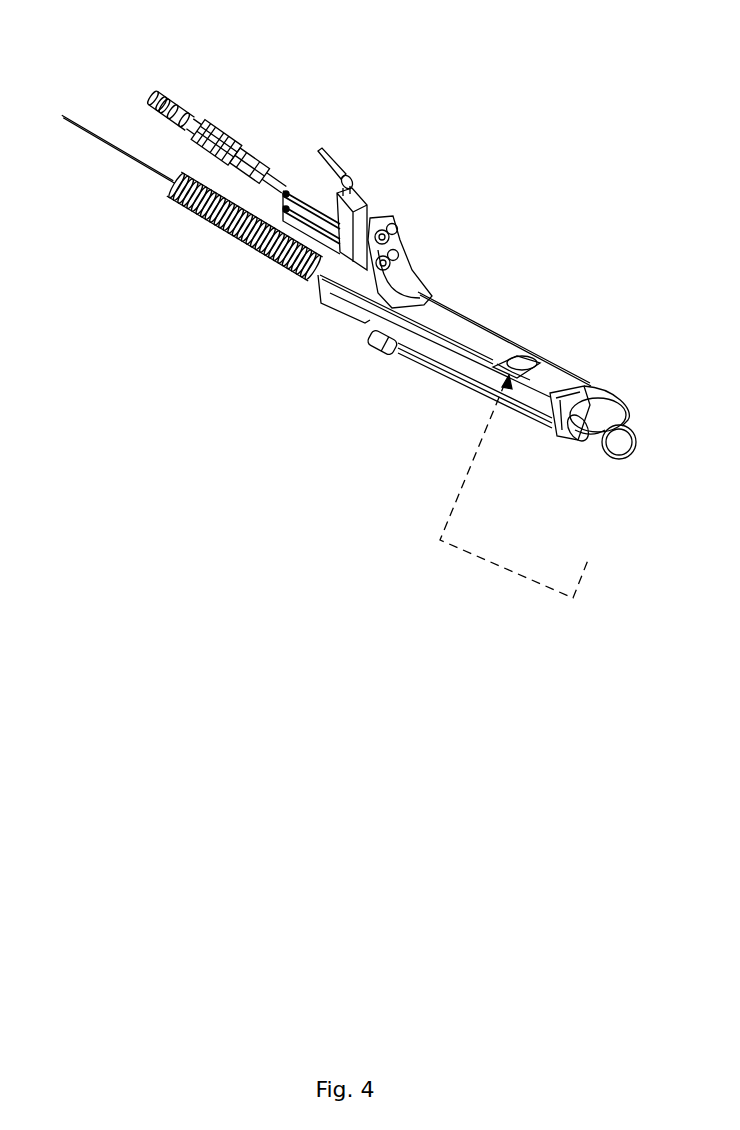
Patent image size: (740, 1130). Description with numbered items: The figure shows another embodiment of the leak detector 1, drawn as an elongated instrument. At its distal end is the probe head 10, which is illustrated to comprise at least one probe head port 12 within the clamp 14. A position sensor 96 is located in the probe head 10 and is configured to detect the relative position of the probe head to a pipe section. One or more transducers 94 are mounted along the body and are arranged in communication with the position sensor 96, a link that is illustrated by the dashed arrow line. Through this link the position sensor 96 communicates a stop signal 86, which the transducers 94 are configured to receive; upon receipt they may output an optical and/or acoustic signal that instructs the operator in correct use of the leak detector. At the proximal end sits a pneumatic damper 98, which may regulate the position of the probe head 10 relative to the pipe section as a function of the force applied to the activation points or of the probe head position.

The leak detector 1 is at (413, 110).
The probe head 10 is at (584, 342).
The probe head port 12 is at (604, 441).
The clamp 14 is at (600, 415).
The stop signal 86 is at (463, 487).
The transducers 94 is at (522, 358).
The position sensor 96 is at (599, 482).
The pneumatic damper 98 is at (230, 128).